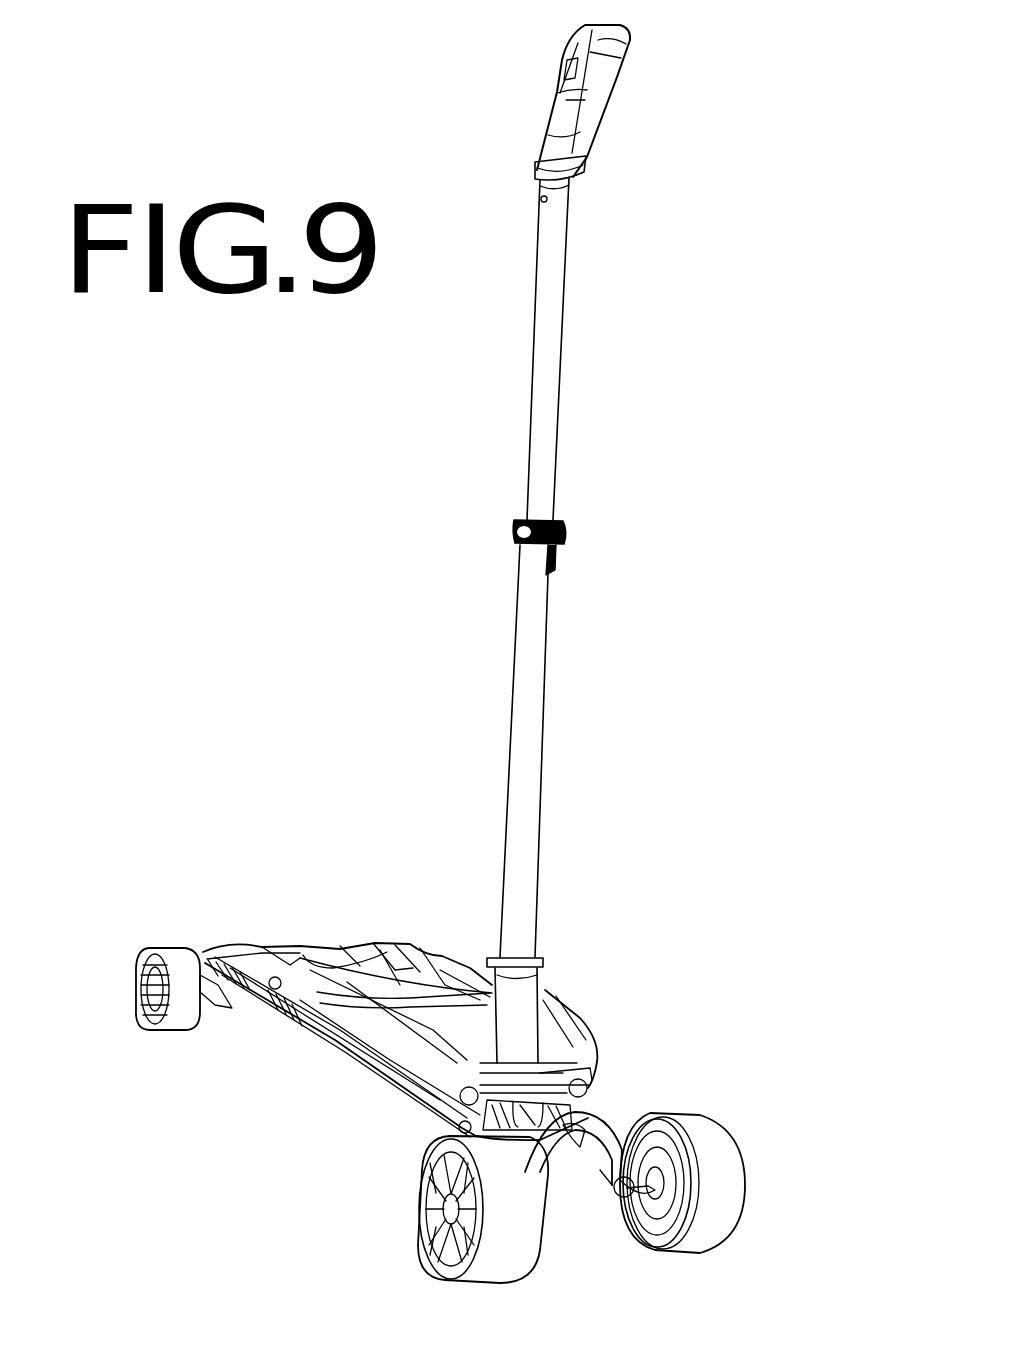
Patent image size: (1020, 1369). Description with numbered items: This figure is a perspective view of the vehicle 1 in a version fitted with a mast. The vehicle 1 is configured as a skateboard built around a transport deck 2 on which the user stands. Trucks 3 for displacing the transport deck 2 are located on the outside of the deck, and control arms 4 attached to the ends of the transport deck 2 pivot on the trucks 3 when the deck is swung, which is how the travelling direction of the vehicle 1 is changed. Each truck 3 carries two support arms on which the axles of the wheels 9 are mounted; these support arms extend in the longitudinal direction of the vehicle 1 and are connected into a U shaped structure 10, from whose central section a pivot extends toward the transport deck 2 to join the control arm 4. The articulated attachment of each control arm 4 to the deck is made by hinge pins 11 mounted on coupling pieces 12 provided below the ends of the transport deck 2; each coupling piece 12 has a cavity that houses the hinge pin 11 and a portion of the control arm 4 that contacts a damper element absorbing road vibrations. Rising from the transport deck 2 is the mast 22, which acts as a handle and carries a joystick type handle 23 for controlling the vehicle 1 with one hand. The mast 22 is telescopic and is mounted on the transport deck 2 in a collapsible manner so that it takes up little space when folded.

The vehicle 1 is at (326, 847).
The transport deck 2 is at (372, 948).
The truck 3 is at (198, 925).
The control arm 4 is at (582, 1043).
The wheel 9 is at (182, 963).
The U shaped structure 10 is at (593, 1112).
The hinge pin 11 is at (457, 1128).
The coupling piece 12 is at (447, 1113).
The mast 22 is at (553, 352).
The joystick type handle 23 is at (592, 133).